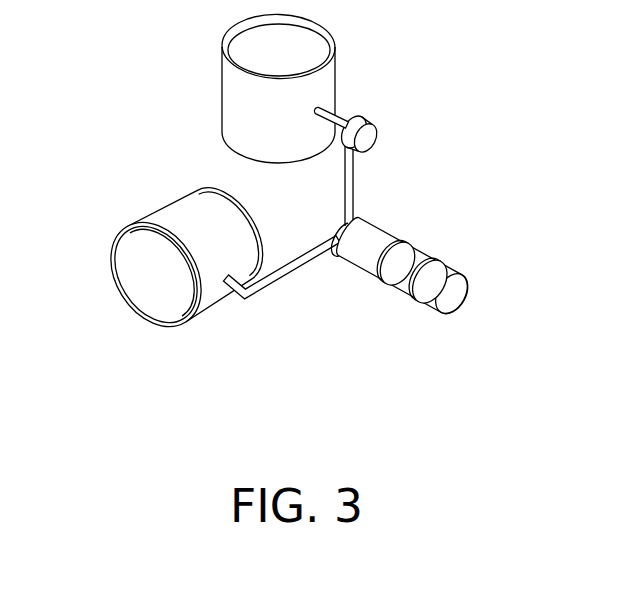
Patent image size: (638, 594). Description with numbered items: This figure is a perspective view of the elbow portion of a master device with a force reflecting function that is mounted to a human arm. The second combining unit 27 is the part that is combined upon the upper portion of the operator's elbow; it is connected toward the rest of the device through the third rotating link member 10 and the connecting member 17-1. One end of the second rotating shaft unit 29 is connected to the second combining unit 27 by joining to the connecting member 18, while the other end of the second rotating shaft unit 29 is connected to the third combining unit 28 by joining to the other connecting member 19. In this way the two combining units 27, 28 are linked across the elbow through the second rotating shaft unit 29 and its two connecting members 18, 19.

The second combining unit 27 is at (221, 90).
The third combining unit 28 is at (150, 212).
The second rotating shaft unit 29 is at (402, 293).
The connecting member 19 is at (298, 272).
The connecting member 18 is at (357, 185).
The third rotating link member 10 is at (383, 145).
The connecting member 17-1 is at (343, 112).